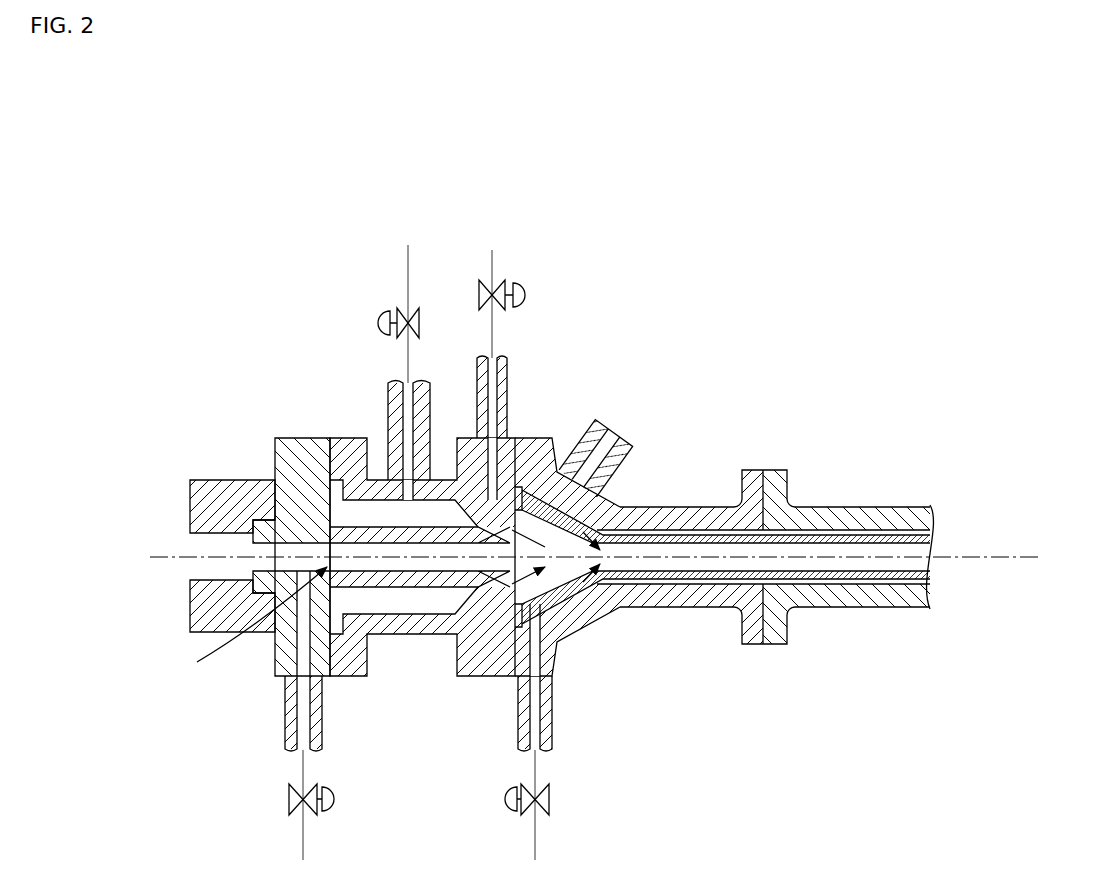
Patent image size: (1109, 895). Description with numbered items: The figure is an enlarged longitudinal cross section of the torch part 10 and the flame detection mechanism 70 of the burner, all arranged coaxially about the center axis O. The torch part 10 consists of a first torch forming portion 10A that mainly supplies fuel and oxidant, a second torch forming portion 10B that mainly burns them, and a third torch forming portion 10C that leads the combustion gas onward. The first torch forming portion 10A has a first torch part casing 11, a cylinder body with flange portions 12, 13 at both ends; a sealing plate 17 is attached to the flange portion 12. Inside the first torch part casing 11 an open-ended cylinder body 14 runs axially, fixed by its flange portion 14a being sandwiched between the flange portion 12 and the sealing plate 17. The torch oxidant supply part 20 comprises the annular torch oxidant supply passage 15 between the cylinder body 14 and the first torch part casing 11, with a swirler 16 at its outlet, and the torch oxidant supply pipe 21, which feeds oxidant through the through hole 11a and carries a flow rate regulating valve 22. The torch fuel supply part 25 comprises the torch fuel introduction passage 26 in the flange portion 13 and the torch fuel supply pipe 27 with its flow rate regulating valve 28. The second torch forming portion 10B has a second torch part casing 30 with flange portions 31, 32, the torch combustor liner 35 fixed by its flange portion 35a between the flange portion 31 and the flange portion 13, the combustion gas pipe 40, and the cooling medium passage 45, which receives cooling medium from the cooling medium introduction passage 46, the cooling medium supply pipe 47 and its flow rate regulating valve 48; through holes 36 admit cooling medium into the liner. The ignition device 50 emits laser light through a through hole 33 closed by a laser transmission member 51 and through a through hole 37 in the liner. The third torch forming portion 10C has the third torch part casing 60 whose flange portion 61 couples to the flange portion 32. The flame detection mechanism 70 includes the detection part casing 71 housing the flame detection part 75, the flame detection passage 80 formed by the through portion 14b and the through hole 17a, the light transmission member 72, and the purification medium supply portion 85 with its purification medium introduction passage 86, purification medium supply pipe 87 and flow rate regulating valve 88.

The torch part 10 is at (720, 342).
The first torch forming portion 10A is at (414, 770).
The second torch forming portion 10B is at (645, 715).
The third torch forming portion 10C is at (838, 700).
The first torch part casing 11 is at (416, 726).
The through hole 11a is at (408, 490).
The flange portion 12 is at (343, 655).
The flange portion 13 is at (485, 665).
The cylinder body 14 is at (433, 580).
The flange portion 14a is at (348, 550).
The through portion 14b is at (297, 550).
The torch oxidant supply passage 15 is at (390, 645).
The swirler 16 is at (470, 645).
The sealing plate 17 is at (287, 645).
The through hole 17a is at (298, 538).
The torch oxidant supply part 20 is at (363, 397).
The torch oxidant supply pipe 21 is at (393, 405).
The flow rate regulating valve 22 is at (381, 312).
The torch fuel supply part 25 is at (537, 340).
The torch fuel introduction passage 26 is at (506, 440).
The torch fuel supply pipe 27 is at (477, 360).
The flow rate regulating valve 28 is at (523, 290).
The second torch part casing 30 is at (685, 503).
The flange portion 31 is at (553, 462).
The flange portion 32 is at (757, 480).
The through hole 33 is at (622, 500).
The torch combustor liner 35 is at (558, 587).
The flange portion 35a is at (545, 483).
The through holes 36 is at (592, 580).
The through hole 37 is at (632, 508).
The combustion gas pipe 40 is at (722, 578).
The cooling medium passage 45 is at (615, 600).
The cooling medium introduction passage 46 is at (548, 650).
The cooling medium supply pipe 47 is at (553, 738).
The flow rate regulating valve 48 is at (507, 810).
The ignition device 50 is at (608, 455).
The laser transmission member 51 is at (590, 432).
The third torch part casing 60 is at (862, 503).
The flange portion 61 is at (780, 478).
The flame detection mechanism 70 is at (165, 428).
The detection part casing 71 is at (200, 598).
The light transmission member 72 is at (260, 567).
The flame detection part 75 is at (207, 545).
The flame detection passage 80 is at (188, 677).
The purification medium supply portion 85 is at (262, 803).
The purification medium introduction passage 86 is at (288, 735).
The purification medium supply pipe 87 is at (300, 660).
The flow rate regulating valve 88 is at (330, 812).
The center axis O is at (866, 560).